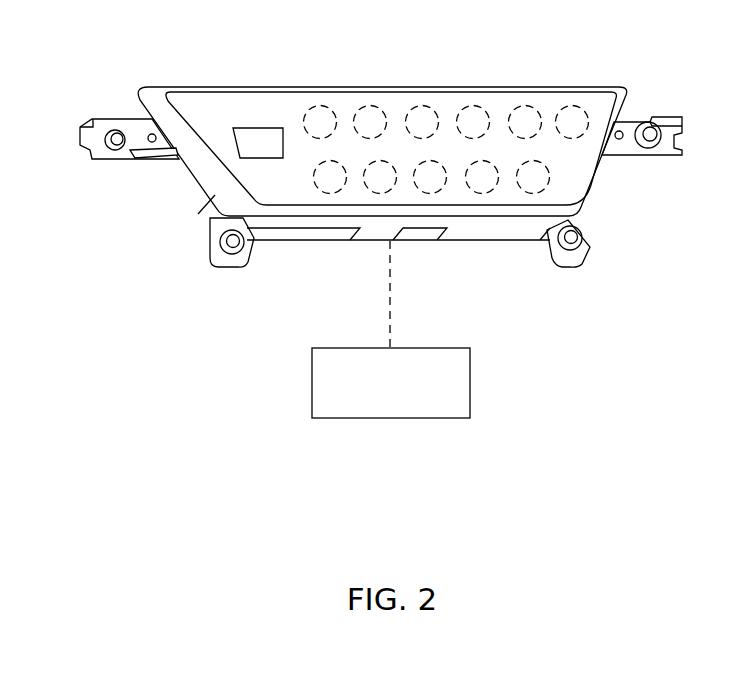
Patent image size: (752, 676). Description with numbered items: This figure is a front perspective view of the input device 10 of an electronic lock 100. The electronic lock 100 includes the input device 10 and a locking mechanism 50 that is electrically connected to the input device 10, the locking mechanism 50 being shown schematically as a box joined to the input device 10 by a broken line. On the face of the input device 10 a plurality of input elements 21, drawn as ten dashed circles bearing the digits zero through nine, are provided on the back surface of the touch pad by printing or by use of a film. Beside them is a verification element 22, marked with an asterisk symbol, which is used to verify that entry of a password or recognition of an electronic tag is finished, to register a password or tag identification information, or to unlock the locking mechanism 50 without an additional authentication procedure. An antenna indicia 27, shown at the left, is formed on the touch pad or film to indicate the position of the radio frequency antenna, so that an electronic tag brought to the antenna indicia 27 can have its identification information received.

The electronic lock 100 is at (74, 45).
The input device 10 is at (607, 68).
The input elements 21 is at (312, 104).
The verification element 22 is at (565, 104).
The antenna indicia 27 is at (222, 148).
The locking mechanism 50 is at (471, 381).